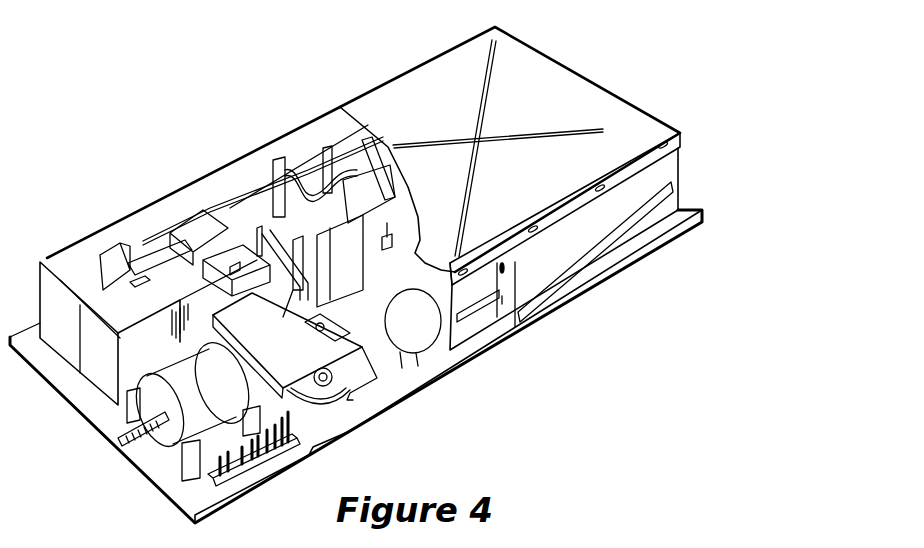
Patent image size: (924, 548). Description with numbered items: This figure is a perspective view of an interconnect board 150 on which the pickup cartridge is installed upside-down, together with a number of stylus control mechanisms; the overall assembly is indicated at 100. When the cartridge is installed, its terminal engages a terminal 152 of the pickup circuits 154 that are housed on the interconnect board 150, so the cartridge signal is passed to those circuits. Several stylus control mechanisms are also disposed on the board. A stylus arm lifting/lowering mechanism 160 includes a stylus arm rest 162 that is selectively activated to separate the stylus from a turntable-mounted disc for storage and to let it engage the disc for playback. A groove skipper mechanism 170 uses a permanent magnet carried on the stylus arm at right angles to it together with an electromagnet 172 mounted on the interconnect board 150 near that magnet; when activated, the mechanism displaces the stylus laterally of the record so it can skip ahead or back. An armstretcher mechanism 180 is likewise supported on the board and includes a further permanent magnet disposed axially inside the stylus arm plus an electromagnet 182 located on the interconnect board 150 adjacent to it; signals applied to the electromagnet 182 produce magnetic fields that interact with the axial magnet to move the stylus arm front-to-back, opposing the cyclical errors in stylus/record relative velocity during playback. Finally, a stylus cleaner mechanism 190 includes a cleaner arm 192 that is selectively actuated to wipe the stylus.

The apparatus 100 is at (219, 186).
The interconnect board 150 is at (400, 394).
The terminal 152 is at (338, 108).
The pickup circuits 154 is at (577, 82).
The stylus arm lifting/lowering mechanism 160 is at (327, 425).
The stylus arm rest 162 is at (252, 220).
The groove skipper mechanism 170 is at (124, 224).
The electromagnet 172 is at (188, 227).
The armstretcher mechanism 180 is at (72, 278).
The electromagnet 182 is at (100, 263).
The stylus cleaner mechanism 190 is at (165, 466).
The cleaner arm 192 is at (380, 138).